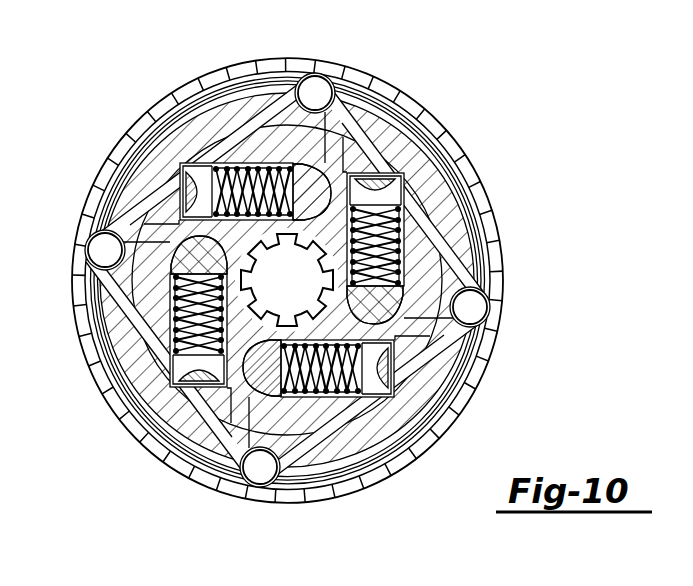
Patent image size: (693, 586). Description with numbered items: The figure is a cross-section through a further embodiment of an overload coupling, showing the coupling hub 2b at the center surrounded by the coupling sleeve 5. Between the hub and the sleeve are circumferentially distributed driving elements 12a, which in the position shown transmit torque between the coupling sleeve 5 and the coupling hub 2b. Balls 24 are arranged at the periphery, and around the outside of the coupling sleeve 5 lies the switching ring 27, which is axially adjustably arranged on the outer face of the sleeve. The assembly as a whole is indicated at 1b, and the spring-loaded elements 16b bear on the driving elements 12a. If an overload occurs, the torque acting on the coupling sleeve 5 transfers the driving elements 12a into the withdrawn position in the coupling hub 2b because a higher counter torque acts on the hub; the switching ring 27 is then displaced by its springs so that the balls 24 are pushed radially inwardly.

The torque limiting coupling 1b is at (487, 122).
The coupling hub 2b is at (320, 484).
The coupling sleeve 5 is at (438, 404).
The driving elements 12a is at (358, 108).
The spring plunger 16b is at (392, 288).
The balls 24 is at (316, 84).
The switching ring 27 is at (447, 463).